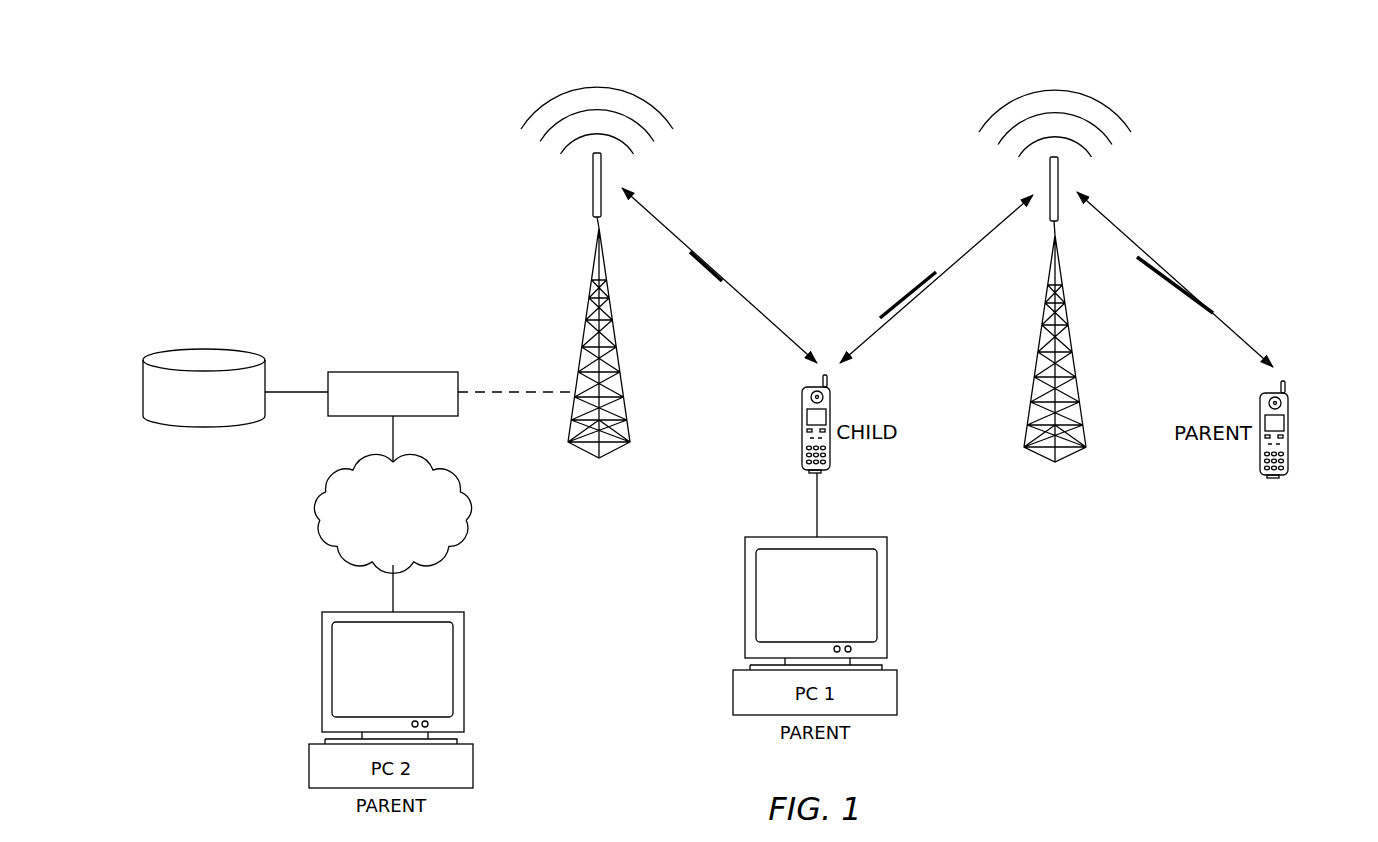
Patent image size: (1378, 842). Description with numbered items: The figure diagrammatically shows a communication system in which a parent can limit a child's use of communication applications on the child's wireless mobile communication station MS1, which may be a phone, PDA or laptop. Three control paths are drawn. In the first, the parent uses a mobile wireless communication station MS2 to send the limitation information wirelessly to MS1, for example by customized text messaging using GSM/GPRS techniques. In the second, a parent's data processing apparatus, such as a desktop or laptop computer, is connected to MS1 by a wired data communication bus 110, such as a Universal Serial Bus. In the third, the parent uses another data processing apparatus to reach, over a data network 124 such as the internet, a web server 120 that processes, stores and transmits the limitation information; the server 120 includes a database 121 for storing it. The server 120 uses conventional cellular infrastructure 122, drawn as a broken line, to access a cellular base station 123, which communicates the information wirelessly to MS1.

The wired data communication bus 110 is at (812, 505).
The web server 120 is at (378, 372).
The database 121 is at (205, 428).
The cellular infrastructure 122 is at (530, 394).
The cellular base station 123 is at (580, 352).
The data network 124 is at (318, 512).
The child's wireless mobile communication station MS1 is at (802, 432).
The parent's mobile wireless communication station MS2 is at (1288, 437).